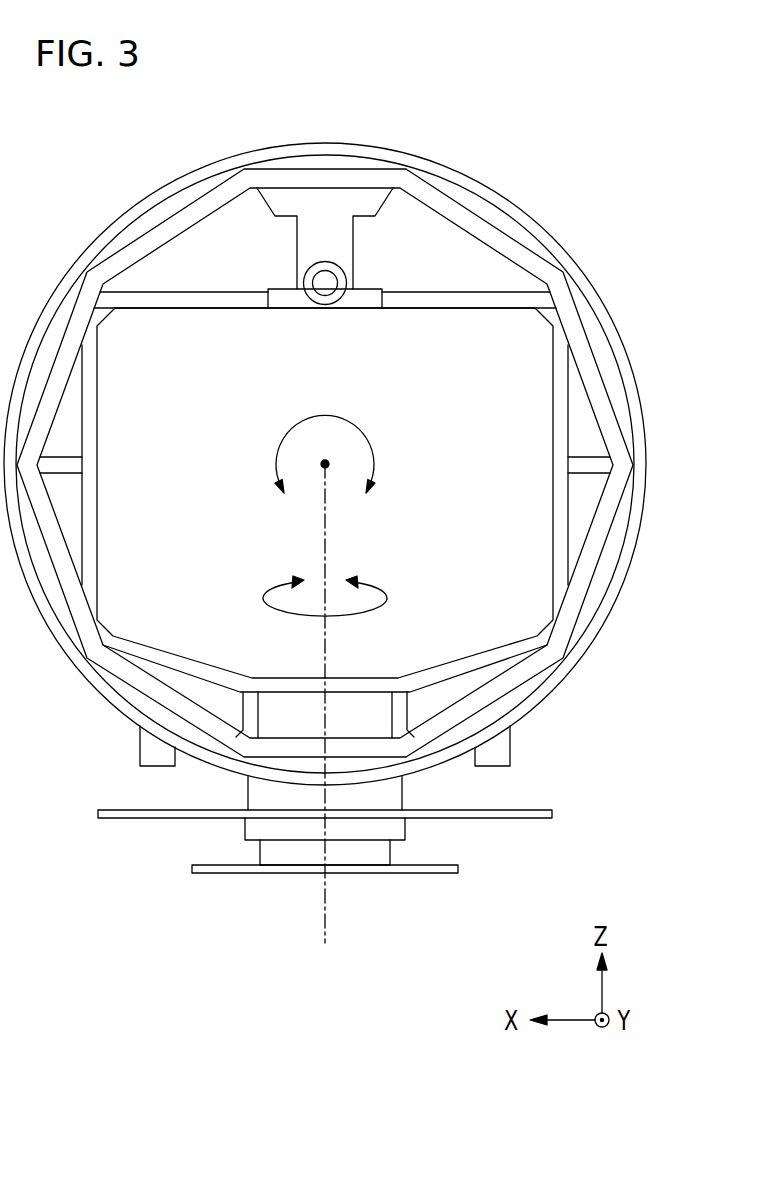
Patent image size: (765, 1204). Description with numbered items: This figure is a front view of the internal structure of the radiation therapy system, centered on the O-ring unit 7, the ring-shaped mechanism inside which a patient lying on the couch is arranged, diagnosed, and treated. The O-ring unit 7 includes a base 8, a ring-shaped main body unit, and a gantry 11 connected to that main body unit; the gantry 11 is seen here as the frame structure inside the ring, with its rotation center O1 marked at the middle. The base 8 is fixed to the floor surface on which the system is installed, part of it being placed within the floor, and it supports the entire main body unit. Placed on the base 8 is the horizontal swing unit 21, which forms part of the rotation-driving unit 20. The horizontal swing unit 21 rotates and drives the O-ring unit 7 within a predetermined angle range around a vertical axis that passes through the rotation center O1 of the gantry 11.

The O-ring unit 7 is at (538, 166).
The gantry 11 is at (590, 282).
The base 8 is at (354, 824).
The horizontal swing unit 21 is at (325, 824).
The rotation-driving unit 20 is at (391, 856).
The rotation center O1 is at (330, 459).